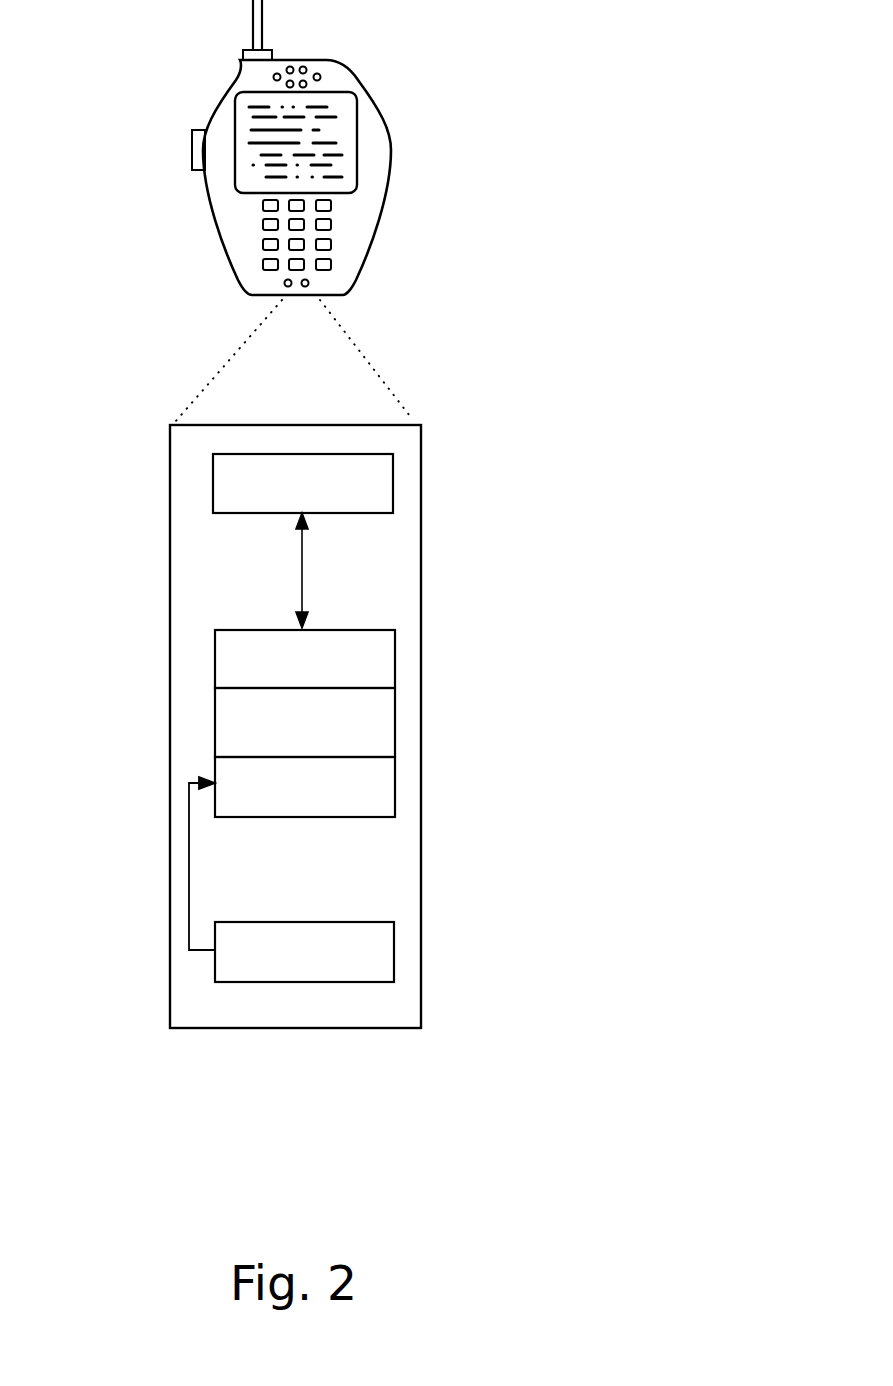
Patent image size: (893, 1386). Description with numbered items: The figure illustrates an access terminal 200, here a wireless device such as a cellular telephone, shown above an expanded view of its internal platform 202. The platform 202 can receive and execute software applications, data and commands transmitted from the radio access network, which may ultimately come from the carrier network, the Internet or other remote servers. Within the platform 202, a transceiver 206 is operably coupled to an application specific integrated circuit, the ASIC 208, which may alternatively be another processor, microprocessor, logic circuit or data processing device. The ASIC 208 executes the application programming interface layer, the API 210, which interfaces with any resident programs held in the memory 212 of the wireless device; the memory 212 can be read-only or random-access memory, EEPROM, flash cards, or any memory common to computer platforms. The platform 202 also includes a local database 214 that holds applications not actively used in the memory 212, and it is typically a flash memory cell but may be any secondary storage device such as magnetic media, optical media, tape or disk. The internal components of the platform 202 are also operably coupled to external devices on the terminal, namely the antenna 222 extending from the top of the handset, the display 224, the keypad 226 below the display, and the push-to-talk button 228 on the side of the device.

The access terminal 200 is at (365, 272).
The platform 202 is at (170, 627).
The transceiver 206 is at (393, 484).
The application specific integrated circuit 208 is at (395, 667).
The application programming interface layer 210 is at (395, 717).
The memory 212 is at (395, 786).
The local database 214 is at (394, 933).
The antenna 222 is at (277, 0).
The display 224 is at (358, 128).
The keypad 226 is at (332, 226).
The push-to-talk button 228 is at (193, 138).